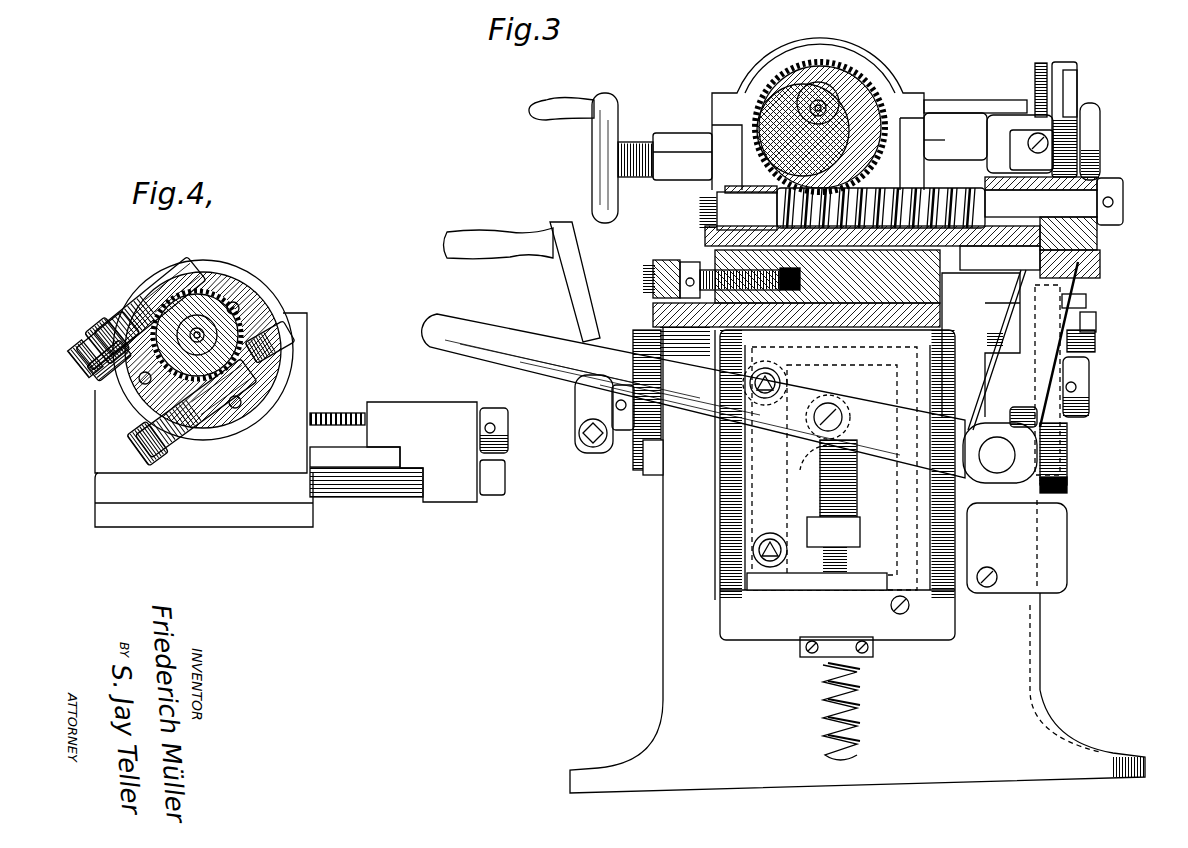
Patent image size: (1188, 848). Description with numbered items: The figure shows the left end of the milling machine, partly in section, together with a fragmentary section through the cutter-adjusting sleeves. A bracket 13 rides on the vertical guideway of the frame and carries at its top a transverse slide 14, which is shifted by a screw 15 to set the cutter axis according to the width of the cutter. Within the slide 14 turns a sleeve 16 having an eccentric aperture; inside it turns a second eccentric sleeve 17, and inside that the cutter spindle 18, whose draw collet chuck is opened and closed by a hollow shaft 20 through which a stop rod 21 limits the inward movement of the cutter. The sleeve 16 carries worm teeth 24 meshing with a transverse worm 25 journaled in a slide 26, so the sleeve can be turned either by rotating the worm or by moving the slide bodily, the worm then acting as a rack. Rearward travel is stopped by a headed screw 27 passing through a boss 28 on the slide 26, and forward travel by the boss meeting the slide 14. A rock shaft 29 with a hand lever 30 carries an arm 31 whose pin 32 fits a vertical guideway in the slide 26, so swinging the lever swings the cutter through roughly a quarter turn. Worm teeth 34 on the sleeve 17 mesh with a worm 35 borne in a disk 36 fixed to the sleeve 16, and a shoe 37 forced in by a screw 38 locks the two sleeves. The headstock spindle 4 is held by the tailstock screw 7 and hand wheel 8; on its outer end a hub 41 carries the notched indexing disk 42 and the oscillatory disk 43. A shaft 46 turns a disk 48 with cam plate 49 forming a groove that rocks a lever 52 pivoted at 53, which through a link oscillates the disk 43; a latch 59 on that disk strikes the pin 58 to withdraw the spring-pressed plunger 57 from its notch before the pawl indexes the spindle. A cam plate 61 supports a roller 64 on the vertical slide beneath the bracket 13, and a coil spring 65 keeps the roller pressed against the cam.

In FIG. 3, the spindle 4 is at (1102, 140).
In FIG. 3, the screw 7 is at (644, 142).
In FIG. 3, the hand wheel 8 is at (606, 104).
In FIG. 3, the bracket 13 is at (930, 358).
In FIG. 3, the slide 14 is at (912, 290).
In FIG. 4, the slide 14 is at (250, 490).
In FIG. 3, the screw 15 is at (706, 268).
In FIG. 3, the sleeve 16 is at (882, 100).
In FIG. 3, the sleeve 17 is at (772, 95).
In FIG. 4, the sleeve 17 is at (125, 360).
In FIG. 3, the spindle 18 is at (832, 80).
In FIG. 4, the spindle 18 is at (200, 318).
In FIG. 3, the hollow shaft 20 is at (818, 100).
In FIG. 3, the stop rod 21 is at (784, 78).
In FIG. 3, the worm teeth 24 is at (884, 166).
In FIG. 3, the worm 25 is at (880, 196).
In FIG. 4, the worm 25 is at (340, 413).
In FIG. 3, the slide 26 is at (1098, 178).
In FIG. 4, the slide 26 is at (405, 412).
In FIG. 3, the headed screw 27 is at (981, 345).
In FIG. 3, the boss 28 is at (1098, 270).
In FIG. 3, the rock shaft 29 is at (997, 472).
In FIG. 3, the hand lever 30 is at (500, 338).
In FIG. 3, the arm 31 is at (1000, 384).
In FIG. 3, the pin 32 is at (1100, 232).
In FIG. 4, the worm teeth 34 is at (206, 322).
In FIG. 4, the worm 35 is at (222, 415).
In FIG. 4, the disk 36 is at (252, 310).
In FIG. 4, the shoe 37 is at (110, 308).
In FIG. 4, the screw 38 is at (137, 313).
In FIG. 3, the hub 41 is at (1025, 112).
In FIG. 3, the indexing disk 42 is at (1040, 64).
In FIG. 3, the oscillatory disk 43 is at (1056, 62).
In FIG. 3, the shaft 46 is at (1090, 385).
In FIG. 3, the disk 48 is at (1062, 490).
In FIG. 3, the cam plate 49 is at (1068, 460).
In FIG. 3, the lever 52 is at (1096, 346).
In FIG. 3, the pivot 53 is at (1098, 320).
In FIG. 3, the spring-pressed plunger 57 is at (1022, 160).
In FIG. 3, the pin 58 is at (1045, 134).
In FIG. 3, the latch 59 is at (1070, 88).
In FIG. 3, the cam plate 61 is at (878, 478).
In FIG. 3, the roller 64 is at (858, 382).
In FIG. 3, the coil spring 65 is at (1086, 300).